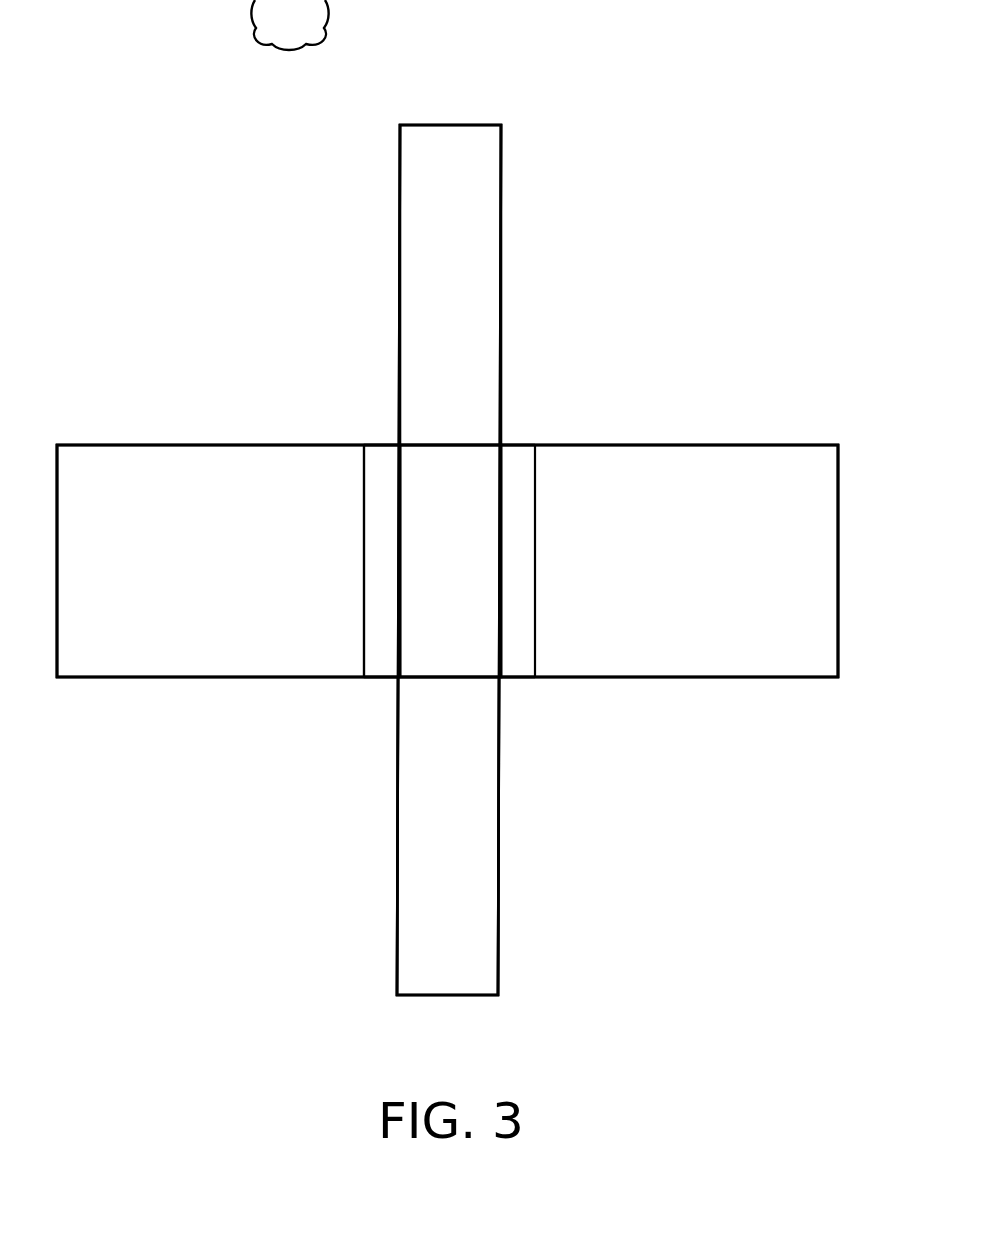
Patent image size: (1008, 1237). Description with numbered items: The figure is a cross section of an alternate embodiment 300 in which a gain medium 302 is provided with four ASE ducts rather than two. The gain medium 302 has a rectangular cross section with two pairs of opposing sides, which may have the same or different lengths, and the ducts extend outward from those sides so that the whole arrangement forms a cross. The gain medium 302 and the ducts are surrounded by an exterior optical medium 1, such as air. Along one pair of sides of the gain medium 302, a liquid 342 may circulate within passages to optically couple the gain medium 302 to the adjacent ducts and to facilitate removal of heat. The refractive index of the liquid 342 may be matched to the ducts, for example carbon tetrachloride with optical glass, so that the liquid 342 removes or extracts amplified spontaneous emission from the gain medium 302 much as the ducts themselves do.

The exterior optical medium 1 is at (298, 36).
The alternate embodiment 300 is at (480, 1082).
The gain medium 302 is at (453, 513).
The liquid 342 is at (373, 570).